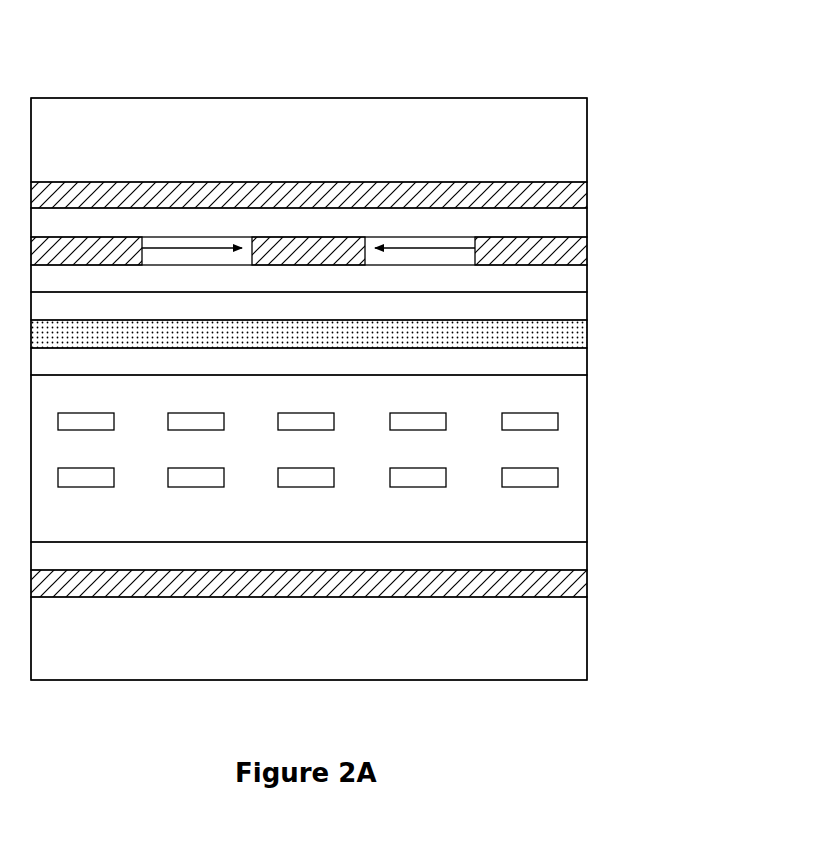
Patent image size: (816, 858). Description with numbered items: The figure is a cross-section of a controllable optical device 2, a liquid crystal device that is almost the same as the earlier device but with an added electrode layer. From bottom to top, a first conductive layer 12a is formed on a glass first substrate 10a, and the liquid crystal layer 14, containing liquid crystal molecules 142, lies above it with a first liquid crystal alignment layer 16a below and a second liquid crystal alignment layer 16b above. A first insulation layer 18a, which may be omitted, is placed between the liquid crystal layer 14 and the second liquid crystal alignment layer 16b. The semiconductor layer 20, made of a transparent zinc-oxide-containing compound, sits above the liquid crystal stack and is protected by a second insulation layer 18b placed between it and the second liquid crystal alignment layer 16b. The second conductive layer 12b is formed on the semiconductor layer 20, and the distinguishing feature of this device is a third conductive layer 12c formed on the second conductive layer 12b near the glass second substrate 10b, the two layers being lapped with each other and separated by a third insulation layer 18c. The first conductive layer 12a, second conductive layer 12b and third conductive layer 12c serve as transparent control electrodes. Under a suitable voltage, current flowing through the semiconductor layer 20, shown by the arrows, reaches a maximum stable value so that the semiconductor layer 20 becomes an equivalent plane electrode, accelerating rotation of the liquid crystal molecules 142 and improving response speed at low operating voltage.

The controllable optical device 2 is at (587, 83).
The first substrate 10a is at (309, 638).
The second substrate 10b is at (309, 140).
The first conductive layer 12a is at (553, 580).
The second conductive layer 12b is at (555, 255).
The third conductive layer 12c is at (555, 190).
The liquid crystal layer 14 is at (562, 457).
The liquid crystal molecule 142 is at (530, 424).
The first liquid crystal alignment layer 16a is at (553, 556).
The second liquid crystal alignment layer 16b is at (543, 337).
The first insulation layer 18a is at (553, 370).
The second insulation layer 18b is at (540, 300).
The third insulation layer 18c is at (552, 222).
The semiconductor layer 20 is at (308, 266).